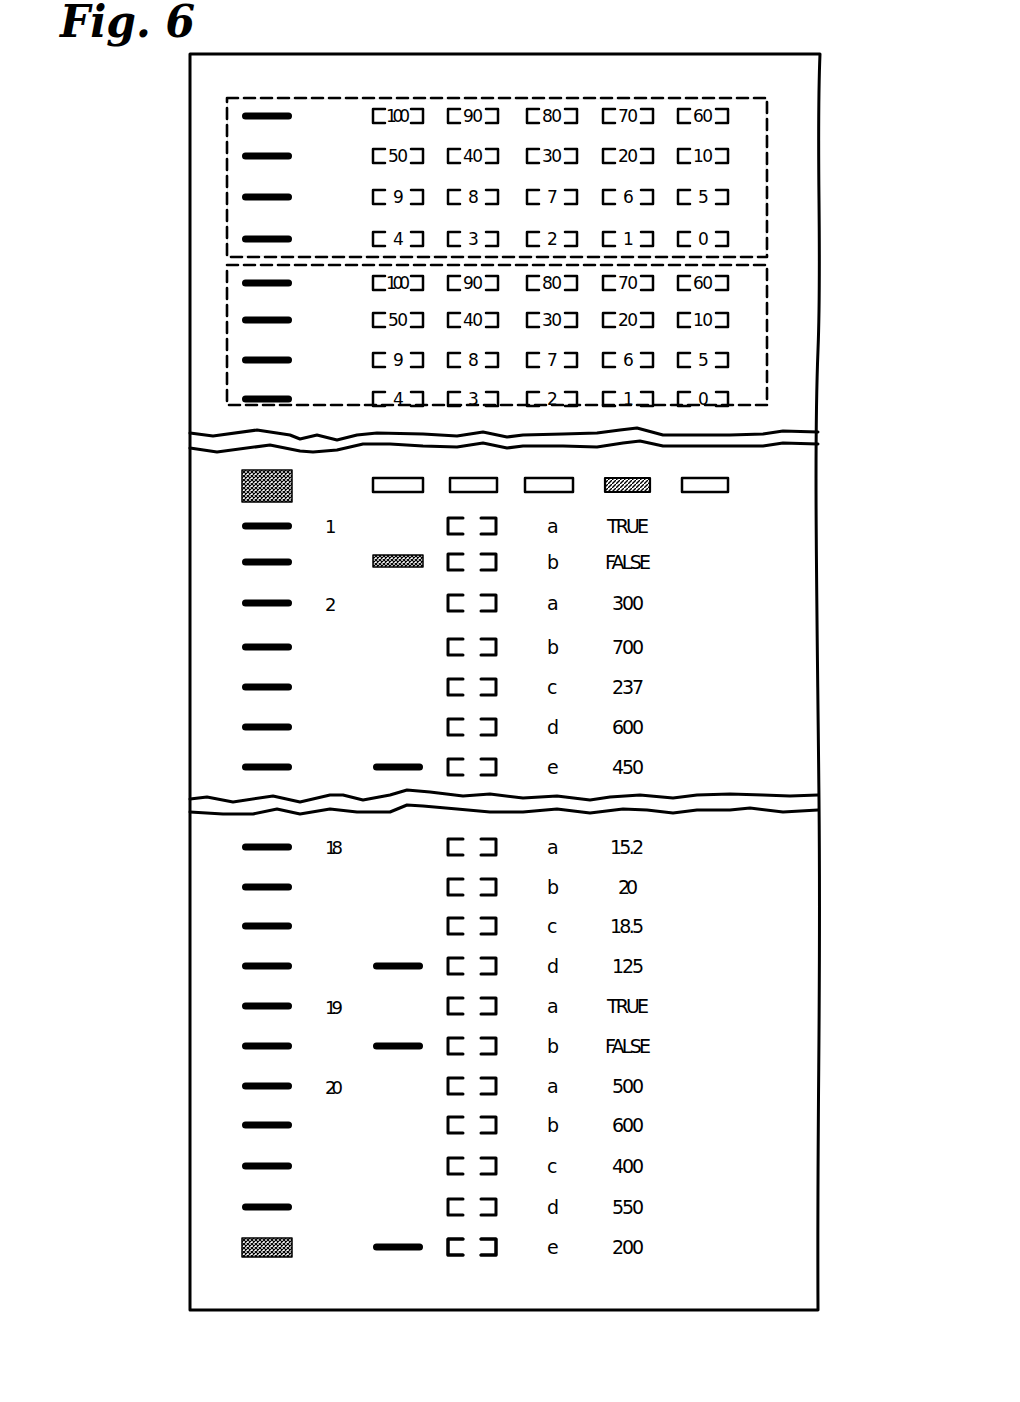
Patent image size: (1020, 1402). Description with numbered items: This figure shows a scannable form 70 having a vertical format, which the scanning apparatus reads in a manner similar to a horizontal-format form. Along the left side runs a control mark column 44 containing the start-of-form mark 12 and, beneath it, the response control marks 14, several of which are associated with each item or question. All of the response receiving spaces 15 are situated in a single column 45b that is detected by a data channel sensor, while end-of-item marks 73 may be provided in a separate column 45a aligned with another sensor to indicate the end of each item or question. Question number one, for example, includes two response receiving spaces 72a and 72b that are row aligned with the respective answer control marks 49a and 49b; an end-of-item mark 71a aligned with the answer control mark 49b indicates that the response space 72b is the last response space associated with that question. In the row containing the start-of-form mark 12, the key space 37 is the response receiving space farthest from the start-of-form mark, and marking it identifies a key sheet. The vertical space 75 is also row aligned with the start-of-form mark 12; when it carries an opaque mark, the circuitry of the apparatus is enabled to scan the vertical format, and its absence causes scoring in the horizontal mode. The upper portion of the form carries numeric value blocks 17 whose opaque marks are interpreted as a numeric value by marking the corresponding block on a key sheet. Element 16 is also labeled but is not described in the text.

The scannable form 70 is at (175, 122).
The response receiving spaces 15 is at (560, 93).
The numeric value block 17 is at (226, 296).
The response control marks 14 is at (258, 367).
The start-of-form mark 12 is at (242, 486).
The answer control mark 49a is at (250, 526).
The answer control mark 49b is at (252, 562).
The response receiving space 72a is at (450, 524).
The response receiving space 72b is at (450, 567).
The end-of-item mark 71a is at (375, 561).
The key space 37 is at (728, 486).
The vertical space 75 is at (650, 488).
The end-of-item marks 73 is at (400, 1049).
The highlighted end icon 16 is at (242, 1246).
The control mark column 44 is at (260, 1263).
The column 45a is at (387, 1261).
The column 45b is at (473, 1264).